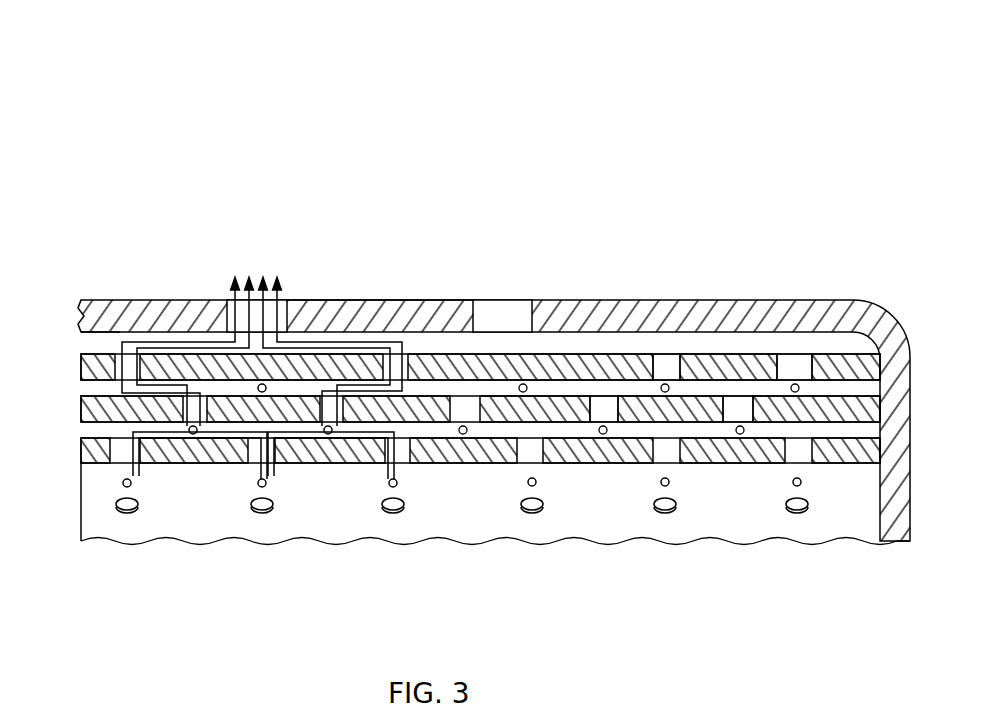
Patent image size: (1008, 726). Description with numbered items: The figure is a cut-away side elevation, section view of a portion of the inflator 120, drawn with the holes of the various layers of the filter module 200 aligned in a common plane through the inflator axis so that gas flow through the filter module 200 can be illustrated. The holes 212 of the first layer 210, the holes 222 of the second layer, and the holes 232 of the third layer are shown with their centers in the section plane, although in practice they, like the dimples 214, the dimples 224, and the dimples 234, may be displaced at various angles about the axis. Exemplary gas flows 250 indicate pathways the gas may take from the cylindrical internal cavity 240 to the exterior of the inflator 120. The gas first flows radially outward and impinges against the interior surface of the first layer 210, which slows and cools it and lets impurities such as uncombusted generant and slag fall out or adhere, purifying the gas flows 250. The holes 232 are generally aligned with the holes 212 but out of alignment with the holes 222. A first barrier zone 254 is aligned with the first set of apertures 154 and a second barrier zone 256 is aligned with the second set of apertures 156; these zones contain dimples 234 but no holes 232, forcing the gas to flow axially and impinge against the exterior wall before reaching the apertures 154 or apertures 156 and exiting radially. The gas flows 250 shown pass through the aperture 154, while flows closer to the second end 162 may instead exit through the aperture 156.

The inflator 120 is at (658, 107).
The first set of apertures 154 is at (230, 300).
The second set of apertures 156 is at (477, 303).
The second end 162 is at (822, 305).
The filter module 200 is at (427, 340).
The first layer 210 is at (82, 443).
The holes 212 is at (80, 412).
The dimples 214 is at (80, 356).
The holes 222 is at (604, 405).
The dimples 224 is at (606, 433).
The holes 232 is at (661, 368).
The dimples 234 is at (672, 387).
The cylindrical internal cavity 240 is at (477, 509).
The gas flows 250 is at (257, 472).
The first barrier zone 254 is at (265, 367).
The second barrier zone 256 is at (548, 365).